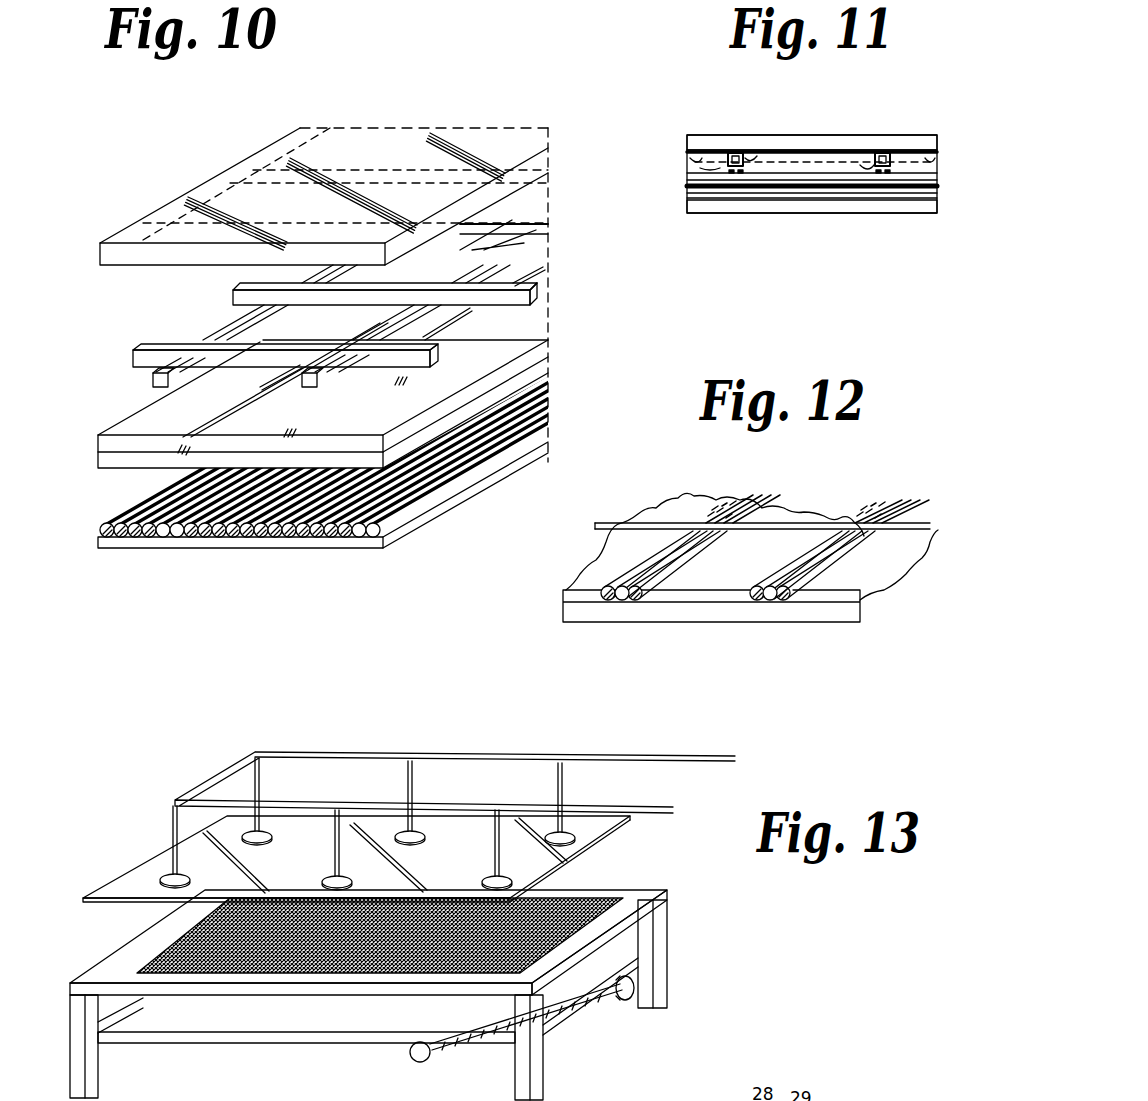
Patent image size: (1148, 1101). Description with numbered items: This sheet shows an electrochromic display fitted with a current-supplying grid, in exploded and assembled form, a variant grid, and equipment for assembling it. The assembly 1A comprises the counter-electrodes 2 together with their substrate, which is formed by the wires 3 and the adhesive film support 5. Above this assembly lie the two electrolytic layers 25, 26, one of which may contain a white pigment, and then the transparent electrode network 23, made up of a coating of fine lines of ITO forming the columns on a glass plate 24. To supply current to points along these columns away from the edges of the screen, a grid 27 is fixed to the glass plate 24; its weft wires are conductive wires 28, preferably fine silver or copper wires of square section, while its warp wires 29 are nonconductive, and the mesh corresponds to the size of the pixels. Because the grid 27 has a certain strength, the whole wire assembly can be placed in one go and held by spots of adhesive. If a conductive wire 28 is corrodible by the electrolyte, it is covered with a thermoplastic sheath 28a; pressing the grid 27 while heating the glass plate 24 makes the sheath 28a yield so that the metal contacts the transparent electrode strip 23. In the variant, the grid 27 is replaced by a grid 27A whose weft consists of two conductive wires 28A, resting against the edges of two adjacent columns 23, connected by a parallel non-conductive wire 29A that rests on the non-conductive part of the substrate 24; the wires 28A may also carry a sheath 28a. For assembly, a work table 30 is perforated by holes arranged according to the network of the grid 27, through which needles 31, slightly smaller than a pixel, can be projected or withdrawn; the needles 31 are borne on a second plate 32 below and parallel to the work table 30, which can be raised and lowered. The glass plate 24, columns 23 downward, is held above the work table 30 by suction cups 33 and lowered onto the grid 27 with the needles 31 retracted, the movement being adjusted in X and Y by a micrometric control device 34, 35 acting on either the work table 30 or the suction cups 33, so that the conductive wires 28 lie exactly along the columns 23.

In FIG. 10, the assembly of the counter-electrodes 1A is at (323, 431).
In FIG. 10, the counter-electrodes 2 is at (142, 542).
In FIG. 10, the wires 3 is at (214, 542).
In FIG. 11, the wires 3 is at (871, 190).
In FIG. 10, the adhesive film support 5 is at (176, 548).
In FIG. 11, the adhesive film support 5 is at (803, 204).
In FIG. 10, the transparent electrode network 23 is at (354, 128).
In FIG. 11, the transparent electrode network 23 is at (728, 150).
In FIG. 12, the transparent electrode network 23 is at (732, 496).
In FIG. 10, the glass plate 24 is at (395, 146).
In FIG. 11, the glass plate 24 is at (696, 143).
In FIG. 12, the glass plate 24 is at (595, 614).
In FIG. 10, the electrolytic layer 25 is at (116, 430).
In FIG. 11, the electrolytic layer 25 is at (745, 158).
In FIG. 10, the electrolytic layer 26 is at (100, 470).
In FIG. 11, the electrolytic layer 26 is at (690, 178).
In FIG. 10, the grid 27 is at (335, 305).
In FIG. 11, the grid 27 is at (684, 152).
In FIG. 13, the grid 27 is at (534, 962).
In FIG. 12, the grid 27A is at (750, 567).
In FIG. 10, the conductive wires 28 is at (233, 296).
In FIG. 11, the conductive wires 28 is at (884, 144).
In FIG. 10, the thermoplastic sheath 28a is at (538, 302).
In FIG. 11, the thermoplastic sheath 28a is at (900, 162).
In FIG. 12, the conductive wires 28A is at (755, 602).
In FIG. 10, the warp wires 29 is at (536, 272).
In FIG. 11, the warp wires 29 is at (833, 140).
In FIG. 12, the warp wires 29 is at (604, 522).
In FIG. 12, the non-conductive wire 29A is at (770, 622).
In FIG. 13, the work table 30 is at (368, 971).
In FIG. 13, the needles 31 is at (186, 1008).
In FIG. 13, the second plate 32 is at (253, 1038).
In FIG. 13, the suction cups 33 is at (316, 875).
In FIG. 13, the micrometric control device 34 is at (419, 1062).
In FIG. 13, the micrometric control device 35 is at (625, 1002).